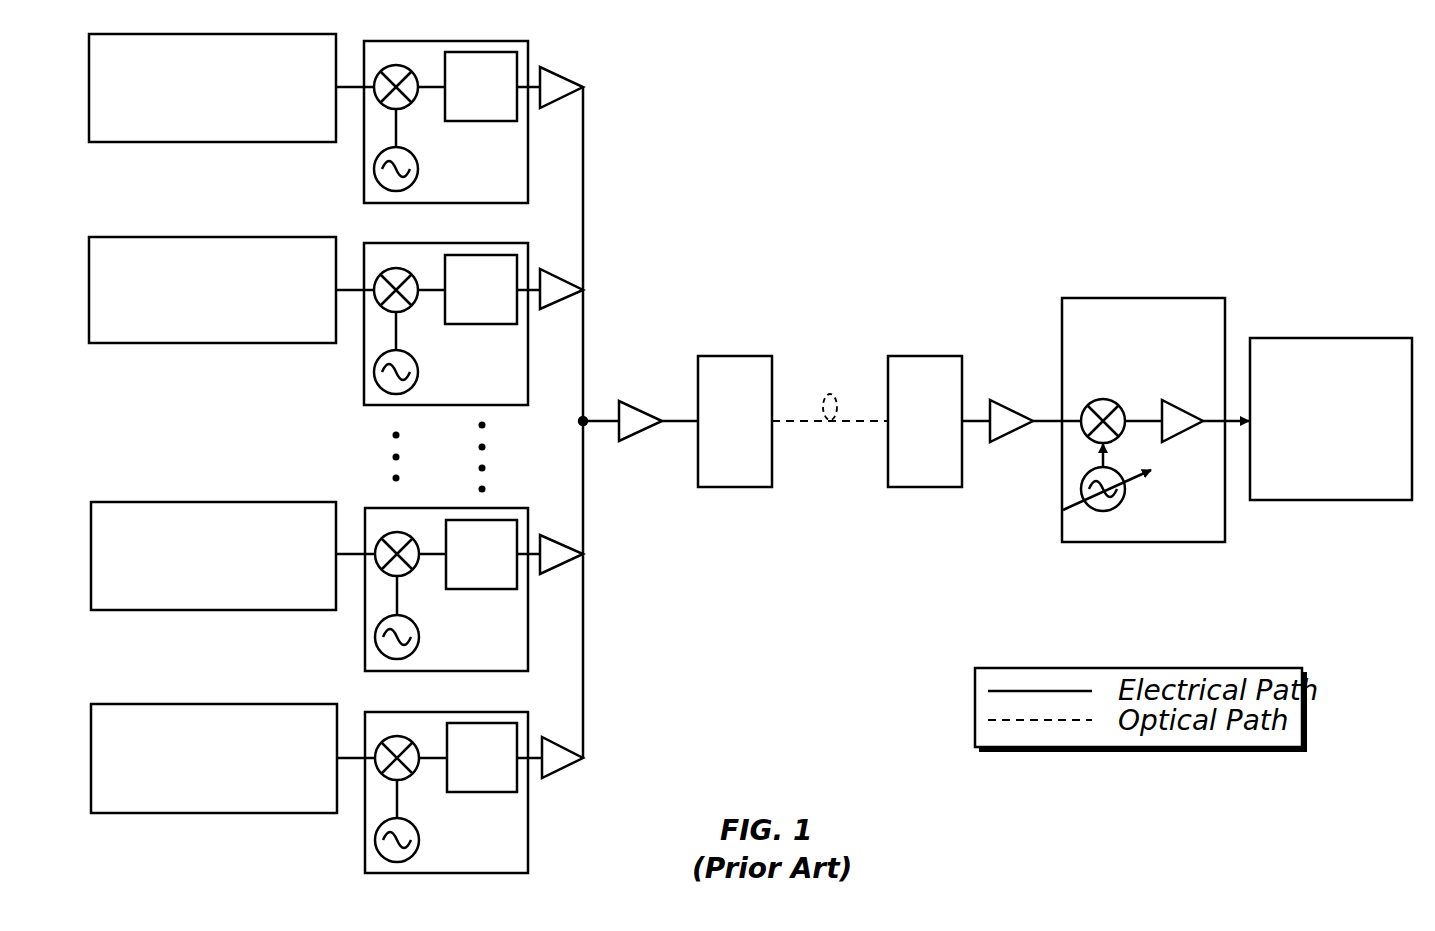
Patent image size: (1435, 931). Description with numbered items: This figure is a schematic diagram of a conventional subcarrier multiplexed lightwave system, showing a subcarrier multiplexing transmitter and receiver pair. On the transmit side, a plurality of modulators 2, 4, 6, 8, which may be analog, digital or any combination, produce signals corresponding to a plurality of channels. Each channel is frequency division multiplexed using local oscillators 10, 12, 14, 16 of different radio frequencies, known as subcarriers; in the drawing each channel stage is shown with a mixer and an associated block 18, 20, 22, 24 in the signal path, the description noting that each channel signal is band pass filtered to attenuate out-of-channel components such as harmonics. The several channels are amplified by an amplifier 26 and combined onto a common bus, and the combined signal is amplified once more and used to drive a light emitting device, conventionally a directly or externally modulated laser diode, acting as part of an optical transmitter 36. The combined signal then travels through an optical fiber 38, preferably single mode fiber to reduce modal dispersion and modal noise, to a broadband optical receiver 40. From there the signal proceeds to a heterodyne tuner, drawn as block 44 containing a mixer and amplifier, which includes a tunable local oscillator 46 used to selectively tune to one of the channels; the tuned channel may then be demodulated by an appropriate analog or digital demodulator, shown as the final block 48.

The modulator 2 is at (212, 88).
The modulator 4 is at (212, 290).
The modulator 6 is at (213, 556).
The modulator 8 is at (214, 758).
The local oscillator 10 is at (492, 41).
The local oscillator 12 is at (492, 243).
The local oscillator 14 is at (492, 508).
The local oscillator 16 is at (492, 712).
The channel 1 filter 18 is at (481, 86).
The channel 2 filter 20 is at (481, 289).
The channel N-1 filter 22 is at (481, 554).
The channel N filter 24 is at (482, 757).
The amplifier 26 is at (558, 70).
The optical transmitter 36 is at (738, 356).
The optical fiber 38 is at (834, 394).
The broadband optical receiver 40 is at (928, 356).
The downconverter 44 is at (1187, 298).
The tunable local oscillator 46 is at (1105, 512).
The receiver 48 is at (1331, 419).